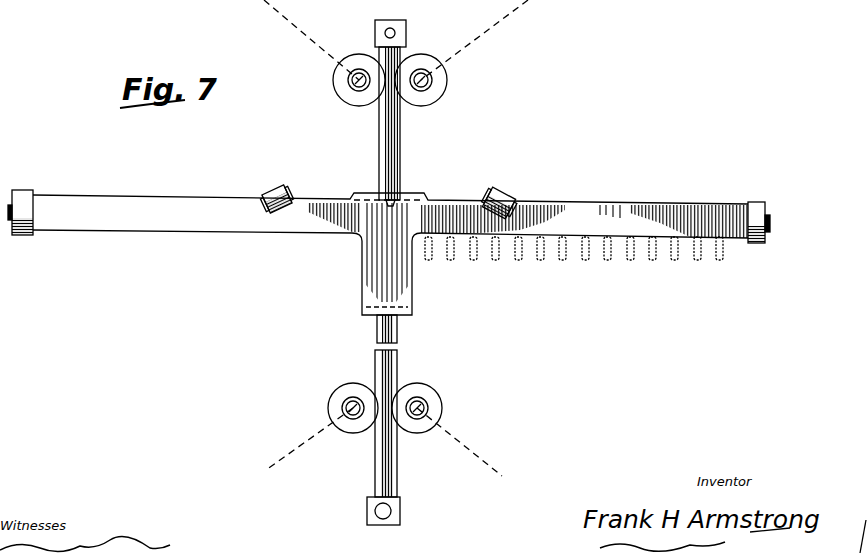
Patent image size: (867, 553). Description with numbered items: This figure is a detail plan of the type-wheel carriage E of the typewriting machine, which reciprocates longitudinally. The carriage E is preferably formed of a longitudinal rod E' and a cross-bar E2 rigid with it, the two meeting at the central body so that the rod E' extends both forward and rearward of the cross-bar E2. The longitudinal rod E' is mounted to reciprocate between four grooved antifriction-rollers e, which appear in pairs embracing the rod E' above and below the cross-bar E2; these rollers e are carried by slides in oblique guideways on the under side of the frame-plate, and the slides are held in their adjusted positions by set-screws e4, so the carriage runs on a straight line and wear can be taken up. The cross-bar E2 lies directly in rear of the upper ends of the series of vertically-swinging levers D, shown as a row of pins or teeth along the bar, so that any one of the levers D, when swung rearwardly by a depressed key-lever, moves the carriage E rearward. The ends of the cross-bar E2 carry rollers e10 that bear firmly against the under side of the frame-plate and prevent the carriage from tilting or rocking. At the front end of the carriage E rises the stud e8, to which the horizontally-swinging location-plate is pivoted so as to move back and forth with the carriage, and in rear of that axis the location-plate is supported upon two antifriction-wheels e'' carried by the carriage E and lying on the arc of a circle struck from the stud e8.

The type-wheel carriage E is at (390, 254).
The longitudinal rod E' is at (412, 113).
The cross-bar E2 is at (654, 205).
The grooved antifriction-rollers e is at (386, 243).
The antifriction-wheels e'' is at (396, 191).
The set-screws e4 is at (755, 215).
The stud e8 is at (400, 511).
The rollers e10 is at (18, 213).
The vertically-swinging levers D is at (541, 262).